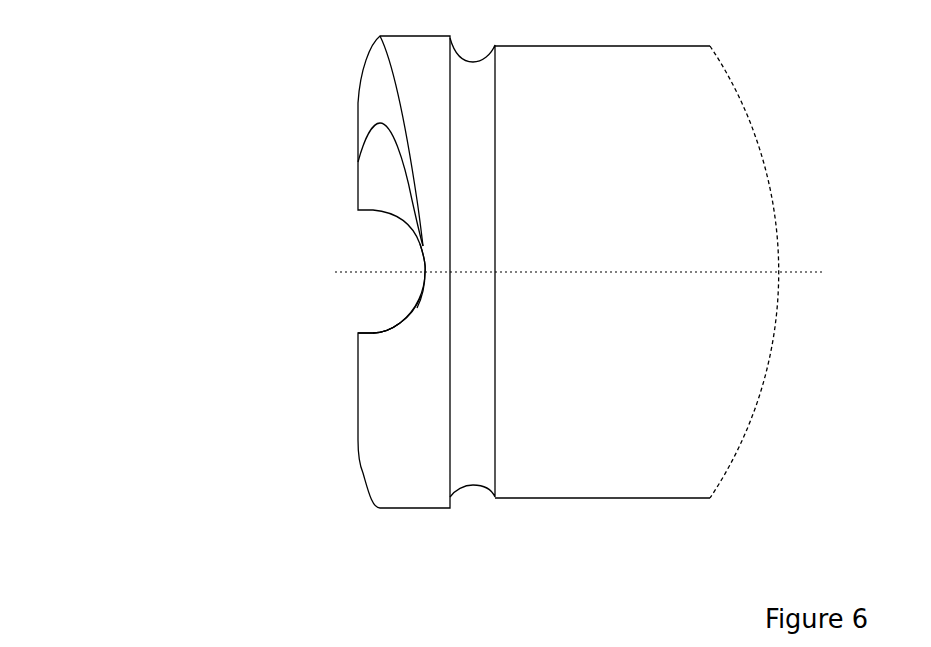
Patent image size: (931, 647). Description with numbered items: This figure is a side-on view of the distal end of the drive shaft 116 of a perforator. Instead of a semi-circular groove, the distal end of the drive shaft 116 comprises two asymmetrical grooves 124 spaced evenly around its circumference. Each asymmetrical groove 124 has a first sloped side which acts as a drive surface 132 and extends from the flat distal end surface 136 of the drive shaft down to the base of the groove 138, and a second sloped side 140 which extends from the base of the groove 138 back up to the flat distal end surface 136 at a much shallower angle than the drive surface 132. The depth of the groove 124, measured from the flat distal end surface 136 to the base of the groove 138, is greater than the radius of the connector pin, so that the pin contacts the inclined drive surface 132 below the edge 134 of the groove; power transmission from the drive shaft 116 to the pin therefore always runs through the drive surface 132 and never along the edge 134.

The drive shaft 116 is at (668, 187).
The asymmetrical groove 124 is at (370, 271).
The drive surface 132 is at (387, 327).
The edge of the groove 134 is at (357, 333).
The flat distal end surface 136 is at (357, 388).
The base of the groove 138 is at (427, 317).
The second sloped side 140 is at (393, 85).